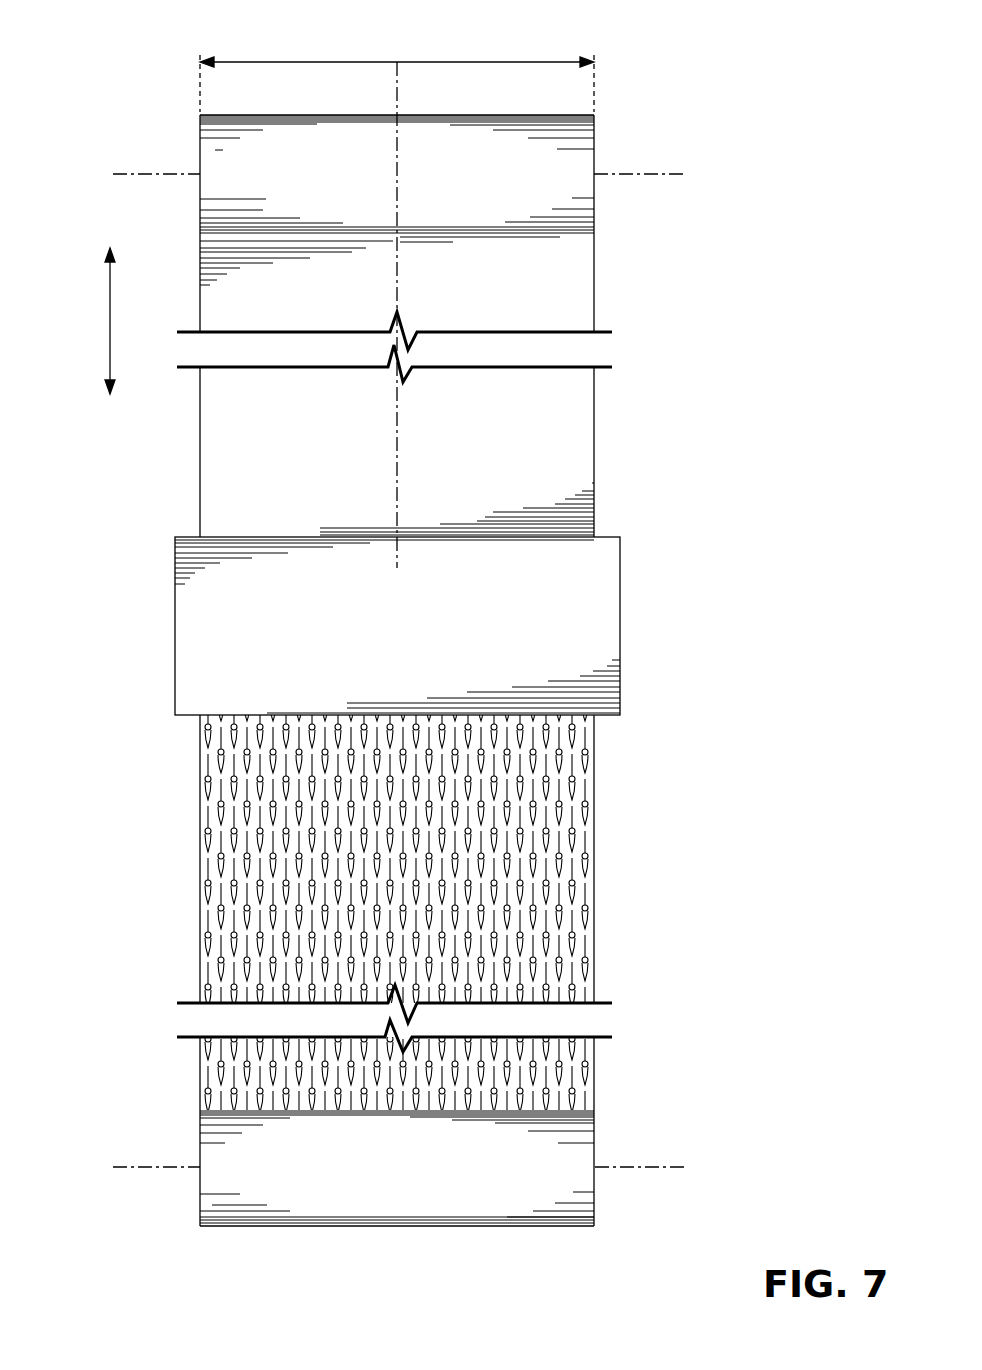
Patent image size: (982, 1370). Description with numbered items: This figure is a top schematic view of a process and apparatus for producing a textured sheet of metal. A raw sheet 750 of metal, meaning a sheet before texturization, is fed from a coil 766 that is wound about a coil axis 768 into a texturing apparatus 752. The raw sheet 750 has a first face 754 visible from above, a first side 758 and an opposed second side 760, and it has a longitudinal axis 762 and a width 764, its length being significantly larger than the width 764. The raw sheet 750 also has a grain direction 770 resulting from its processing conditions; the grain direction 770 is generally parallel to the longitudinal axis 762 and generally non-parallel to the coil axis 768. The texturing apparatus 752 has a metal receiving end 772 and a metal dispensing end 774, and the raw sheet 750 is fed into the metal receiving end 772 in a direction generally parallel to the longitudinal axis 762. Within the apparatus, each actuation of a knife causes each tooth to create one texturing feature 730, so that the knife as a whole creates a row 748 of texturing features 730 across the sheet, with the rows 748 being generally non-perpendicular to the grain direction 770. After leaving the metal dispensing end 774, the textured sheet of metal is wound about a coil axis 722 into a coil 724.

The coil axis 722 is at (638, 1167).
The coil 724 is at (432, 1187).
The texturing feature 730 is at (598, 858).
The row 748 is at (208, 830).
The raw sheet of metal 750 is at (558, 420).
The texturing apparatus 752 is at (588, 633).
The first face 754 is at (582, 464).
The first side 758 is at (597, 511).
The second side 760 is at (200, 513).
The longitudinal axis 762 is at (397, 92).
The width 764 is at (444, 62).
The coil 766 is at (200, 150).
The coil axis 768 is at (637, 173).
The grain direction 770 is at (110, 325).
The metal receiving end 772 is at (480, 525).
The metal dispensing end 774 is at (314, 725).